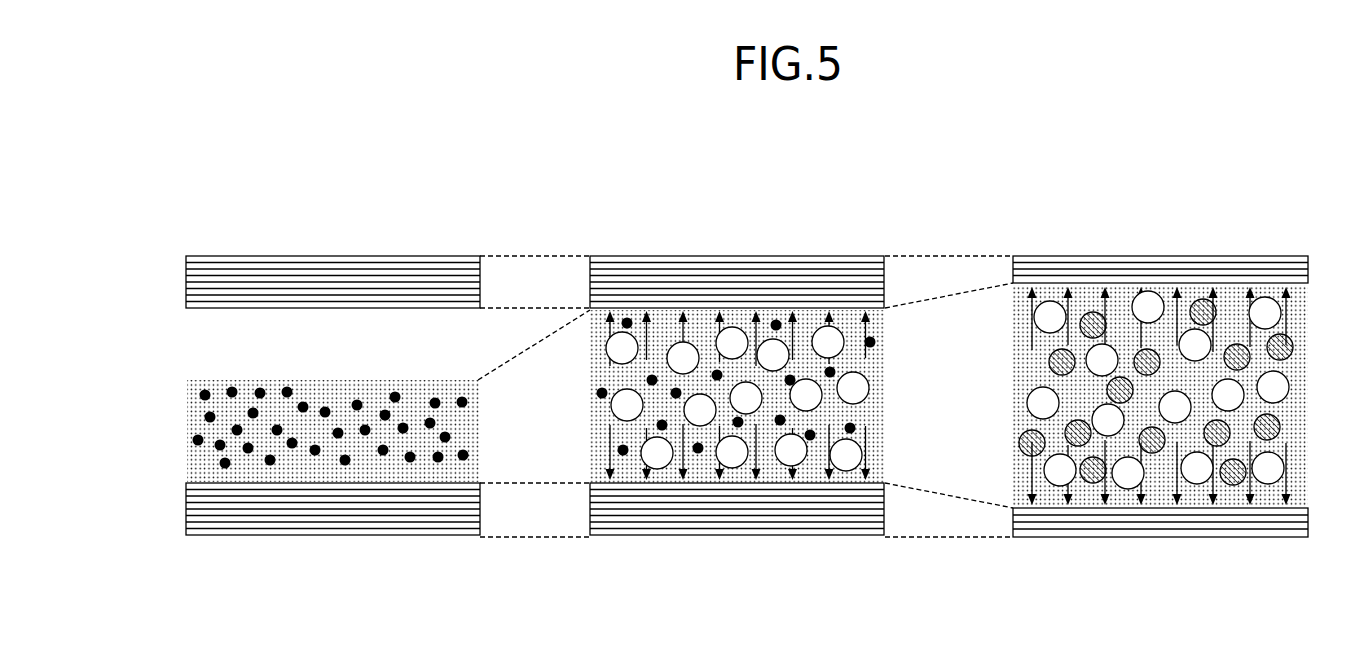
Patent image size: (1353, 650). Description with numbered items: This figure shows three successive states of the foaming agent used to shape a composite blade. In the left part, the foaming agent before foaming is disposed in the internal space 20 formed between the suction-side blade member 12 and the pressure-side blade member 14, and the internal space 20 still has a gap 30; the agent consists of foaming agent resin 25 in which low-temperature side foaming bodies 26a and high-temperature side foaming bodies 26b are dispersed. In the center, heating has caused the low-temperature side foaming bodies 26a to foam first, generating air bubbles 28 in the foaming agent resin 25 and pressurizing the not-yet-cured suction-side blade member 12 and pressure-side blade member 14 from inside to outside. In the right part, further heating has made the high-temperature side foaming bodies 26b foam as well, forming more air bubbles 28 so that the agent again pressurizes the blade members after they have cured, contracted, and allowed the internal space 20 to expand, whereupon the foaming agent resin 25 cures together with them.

The suction-side blade member 12 is at (250, 280).
The pressure-side blade member 14 is at (250, 512).
The internal space 20 is at (338, 317).
The foaming agent resin 25 is at (403, 462).
The low-temperature side foaming bodies 26a is at (326, 410).
The high-temperature side foaming bodies 26b is at (315, 453).
The air bubbles 28 is at (659, 458).
The gap 30 is at (205, 345).